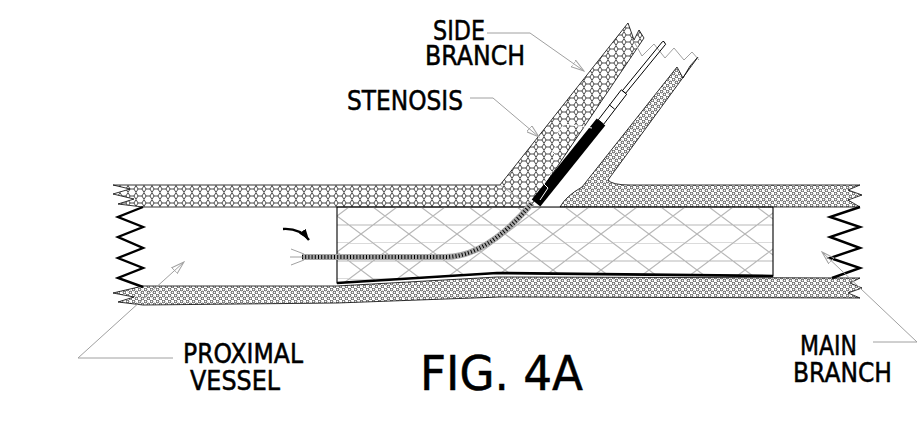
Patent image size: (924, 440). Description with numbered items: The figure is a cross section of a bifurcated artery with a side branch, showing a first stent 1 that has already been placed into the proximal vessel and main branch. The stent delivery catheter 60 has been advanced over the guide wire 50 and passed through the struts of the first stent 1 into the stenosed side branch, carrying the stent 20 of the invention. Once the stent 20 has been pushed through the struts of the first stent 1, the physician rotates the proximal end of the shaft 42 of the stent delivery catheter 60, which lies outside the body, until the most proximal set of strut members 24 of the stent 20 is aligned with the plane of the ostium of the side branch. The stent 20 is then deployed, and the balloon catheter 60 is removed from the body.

The first stent 1 is at (384, 188).
The stent 20 is at (614, 128).
The most proximal set of strut members 24 is at (503, 185).
The shaft 42 is at (300, 257).
The guide wire 50 is at (646, 74).
The stent delivery catheter 60 is at (280, 233).